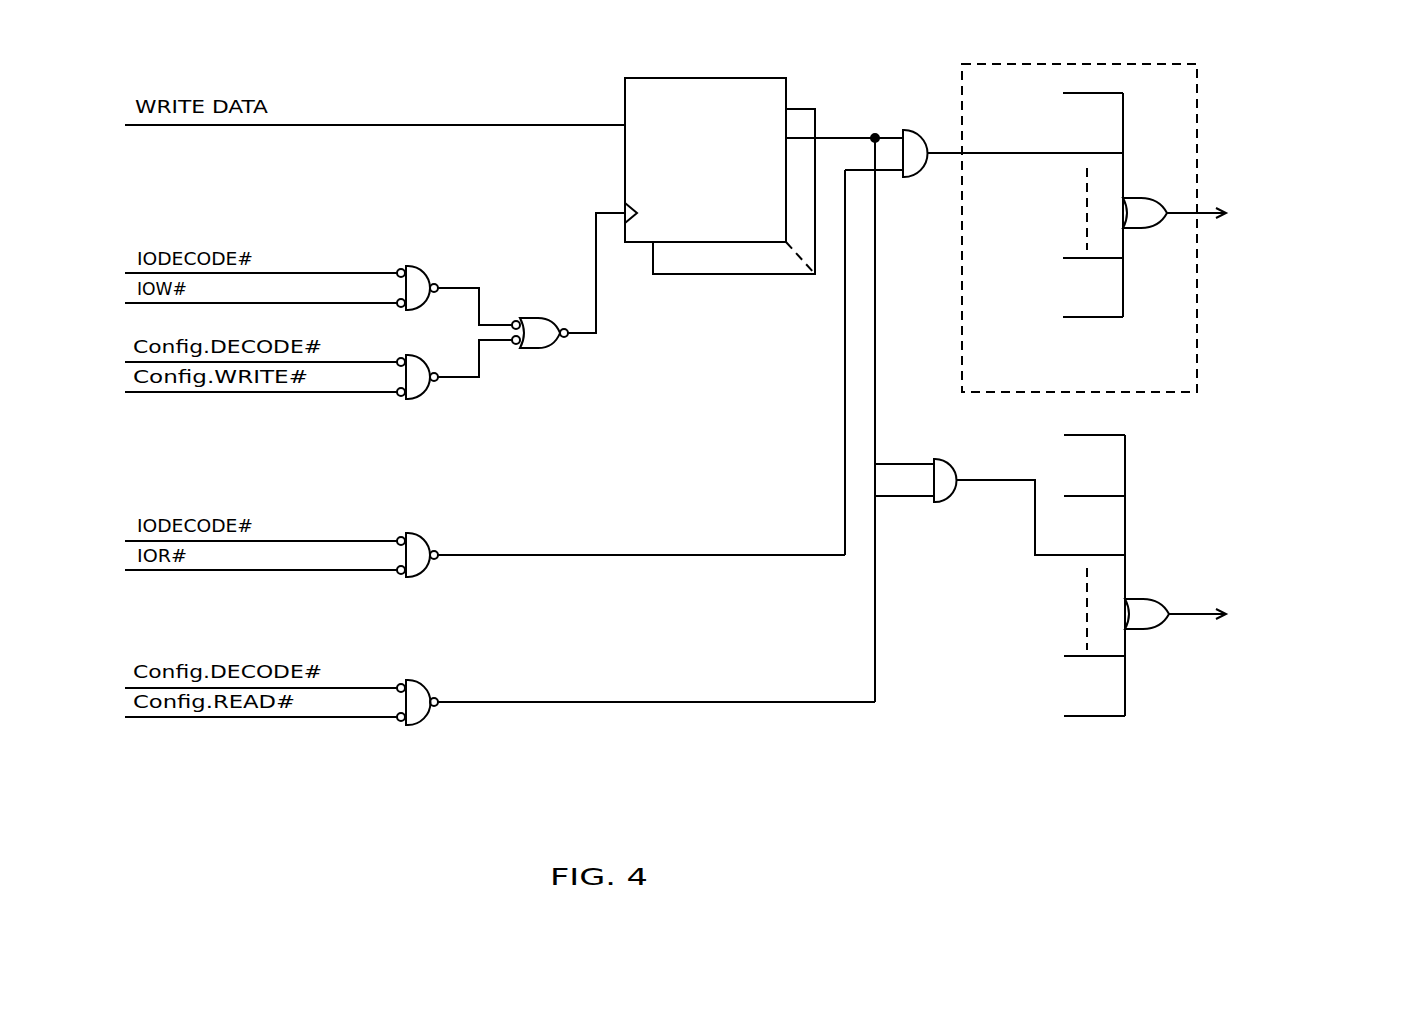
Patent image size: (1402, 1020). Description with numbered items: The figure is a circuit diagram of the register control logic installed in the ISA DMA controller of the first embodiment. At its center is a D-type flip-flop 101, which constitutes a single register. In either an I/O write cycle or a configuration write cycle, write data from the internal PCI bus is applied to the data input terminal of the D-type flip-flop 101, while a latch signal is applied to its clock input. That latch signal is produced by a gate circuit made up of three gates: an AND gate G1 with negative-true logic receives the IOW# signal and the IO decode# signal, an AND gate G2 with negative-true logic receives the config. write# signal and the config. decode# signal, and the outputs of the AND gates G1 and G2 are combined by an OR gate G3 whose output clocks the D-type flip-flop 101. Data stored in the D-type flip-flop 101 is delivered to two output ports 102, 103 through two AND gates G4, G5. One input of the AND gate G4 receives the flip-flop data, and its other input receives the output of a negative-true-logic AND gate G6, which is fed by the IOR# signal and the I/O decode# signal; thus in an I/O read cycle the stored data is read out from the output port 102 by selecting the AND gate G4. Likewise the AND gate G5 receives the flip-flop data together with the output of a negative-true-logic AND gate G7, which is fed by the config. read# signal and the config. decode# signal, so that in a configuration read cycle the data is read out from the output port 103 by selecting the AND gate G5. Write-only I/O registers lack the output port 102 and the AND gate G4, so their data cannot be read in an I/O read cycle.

The D-type flip-flop 101 is at (713, 78).
The output port 102 is at (1205, 128).
The output port 103 is at (954, 690).
The AND gate G1 is at (412, 266).
The AND gate G2 is at (412, 399).
The OR gate G3 is at (535, 318).
The AND gate G4 is at (905, 130).
The AND gate G5 is at (936, 458).
The AND gate G6 is at (412, 533).
The AND gate G7 is at (412, 725).